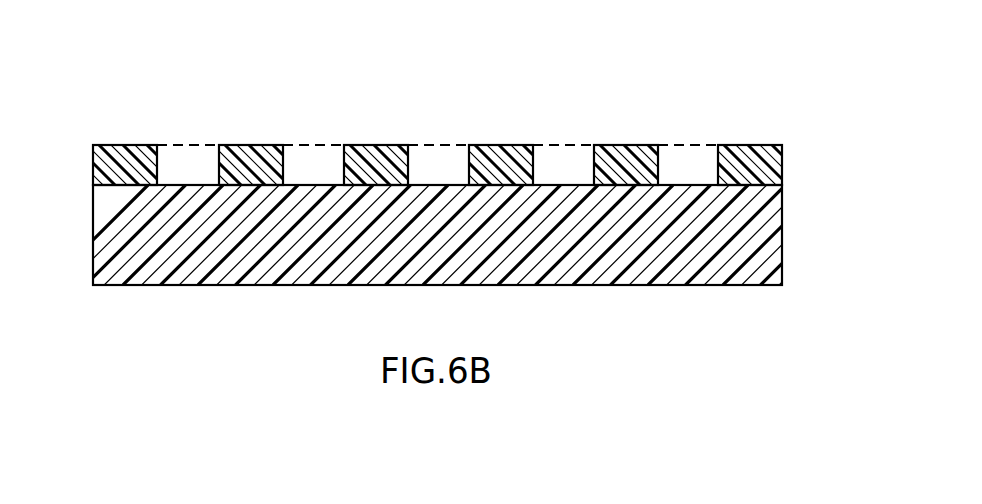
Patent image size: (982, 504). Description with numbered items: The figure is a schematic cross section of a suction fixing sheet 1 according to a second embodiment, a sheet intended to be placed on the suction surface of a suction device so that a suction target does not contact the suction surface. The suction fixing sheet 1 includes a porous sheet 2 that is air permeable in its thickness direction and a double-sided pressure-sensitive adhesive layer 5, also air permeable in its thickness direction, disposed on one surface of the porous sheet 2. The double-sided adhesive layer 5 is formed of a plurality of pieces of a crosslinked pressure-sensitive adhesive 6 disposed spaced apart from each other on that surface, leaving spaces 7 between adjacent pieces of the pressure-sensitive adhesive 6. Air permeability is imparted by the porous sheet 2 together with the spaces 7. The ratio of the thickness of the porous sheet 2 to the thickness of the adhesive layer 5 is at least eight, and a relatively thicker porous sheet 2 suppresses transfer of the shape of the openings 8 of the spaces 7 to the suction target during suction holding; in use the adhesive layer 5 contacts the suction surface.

The suction fixing sheet 1 is at (700, 97).
The porous sheet 2 is at (760, 237).
The double-sided pressure-sensitive adhesive layer 5 is at (790, 145).
The pressure-sensitive adhesive 6 is at (760, 162).
The spaces 7 is at (187, 160).
The openings 8 is at (204, 141).